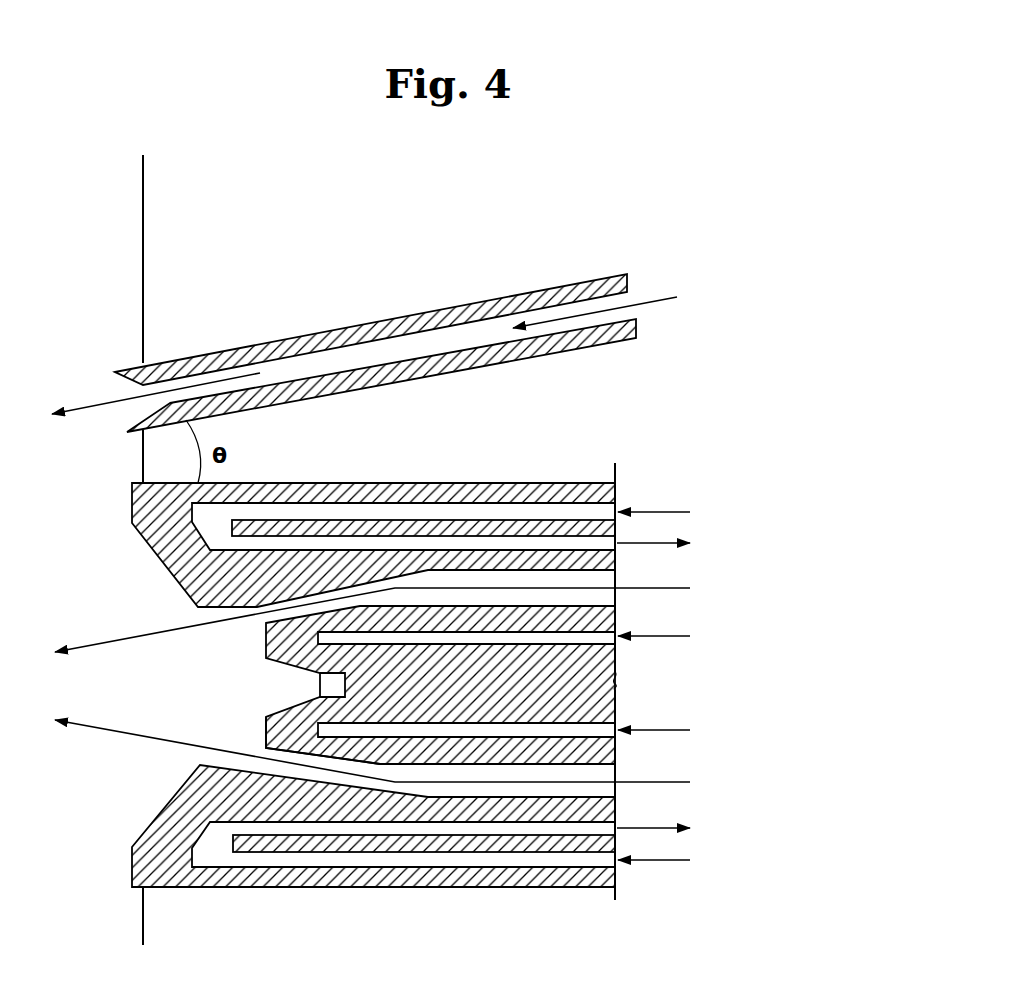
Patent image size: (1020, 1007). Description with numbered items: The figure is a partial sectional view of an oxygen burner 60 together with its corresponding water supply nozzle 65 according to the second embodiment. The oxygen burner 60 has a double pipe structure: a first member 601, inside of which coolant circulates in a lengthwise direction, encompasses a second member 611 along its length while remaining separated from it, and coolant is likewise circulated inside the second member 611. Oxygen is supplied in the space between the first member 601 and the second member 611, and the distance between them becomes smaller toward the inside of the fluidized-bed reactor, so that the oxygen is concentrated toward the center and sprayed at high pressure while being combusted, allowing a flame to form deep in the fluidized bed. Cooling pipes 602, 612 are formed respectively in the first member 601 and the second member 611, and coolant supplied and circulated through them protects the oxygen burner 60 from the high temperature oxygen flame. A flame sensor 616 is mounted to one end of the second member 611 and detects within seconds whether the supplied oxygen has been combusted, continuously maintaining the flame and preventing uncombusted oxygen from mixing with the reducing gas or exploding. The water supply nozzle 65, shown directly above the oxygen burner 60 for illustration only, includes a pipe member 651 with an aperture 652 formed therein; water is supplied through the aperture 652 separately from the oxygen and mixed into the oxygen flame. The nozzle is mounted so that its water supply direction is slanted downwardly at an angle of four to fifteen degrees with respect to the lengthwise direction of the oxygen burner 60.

The oxygen burner 60 is at (461, 715).
The first member 601 is at (133, 521).
The cooling pipe 602 is at (520, 507).
The second member 611 is at (266, 720).
The cooling pipe 612 is at (443, 637).
The flame sensor 616 is at (320, 685).
The water supply nozzle 65 is at (394, 319).
The pipe member 651 is at (560, 288).
The aperture 652 is at (470, 347).